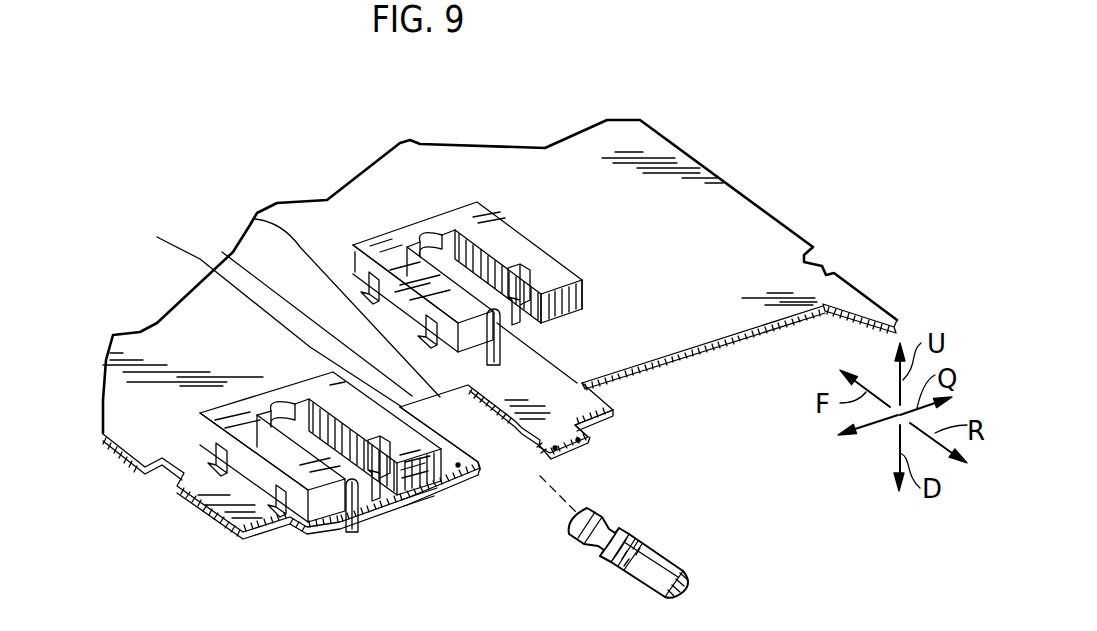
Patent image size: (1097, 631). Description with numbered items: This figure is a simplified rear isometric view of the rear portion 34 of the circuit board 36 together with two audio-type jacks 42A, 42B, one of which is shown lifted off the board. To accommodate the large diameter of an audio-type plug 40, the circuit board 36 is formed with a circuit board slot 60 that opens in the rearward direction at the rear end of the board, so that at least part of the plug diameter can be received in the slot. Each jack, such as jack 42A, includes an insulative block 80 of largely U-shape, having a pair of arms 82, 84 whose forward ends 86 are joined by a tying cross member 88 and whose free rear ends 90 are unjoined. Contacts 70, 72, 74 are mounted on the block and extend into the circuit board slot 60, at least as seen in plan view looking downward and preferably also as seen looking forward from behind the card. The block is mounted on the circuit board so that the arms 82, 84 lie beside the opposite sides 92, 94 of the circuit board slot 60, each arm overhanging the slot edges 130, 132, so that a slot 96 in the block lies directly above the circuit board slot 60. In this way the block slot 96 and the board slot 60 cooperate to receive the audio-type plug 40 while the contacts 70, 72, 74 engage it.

The circuit board 36 is at (750, 243).
The rear portion of the circuit board 34 is at (837, 280).
The contact 72 is at (605, 370).
The circuit board slot 60 is at (497, 450).
The side of the circuit board slot 92 is at (465, 455).
The contact 74 is at (600, 423).
The side of the circuit board slot 94 is at (545, 460).
The arm 82 is at (255, 219).
The circuit board slot edge 132 is at (222, 252).
The circuit board slot edge 130 is at (254, 312).
The audio-type jack 42A is at (444, 205).
The audio-type jack 42B is at (214, 397).
The contact 70 is at (430, 250).
The slot in the block 96 is at (462, 235).
The insulative block 80 is at (499, 208).
The arm 84 is at (547, 263).
The free rear end 90 is at (560, 282).
The tying cross member 88 is at (387, 240).
The forward end 86 is at (378, 300).
The audio-type plug 40 is at (655, 540).